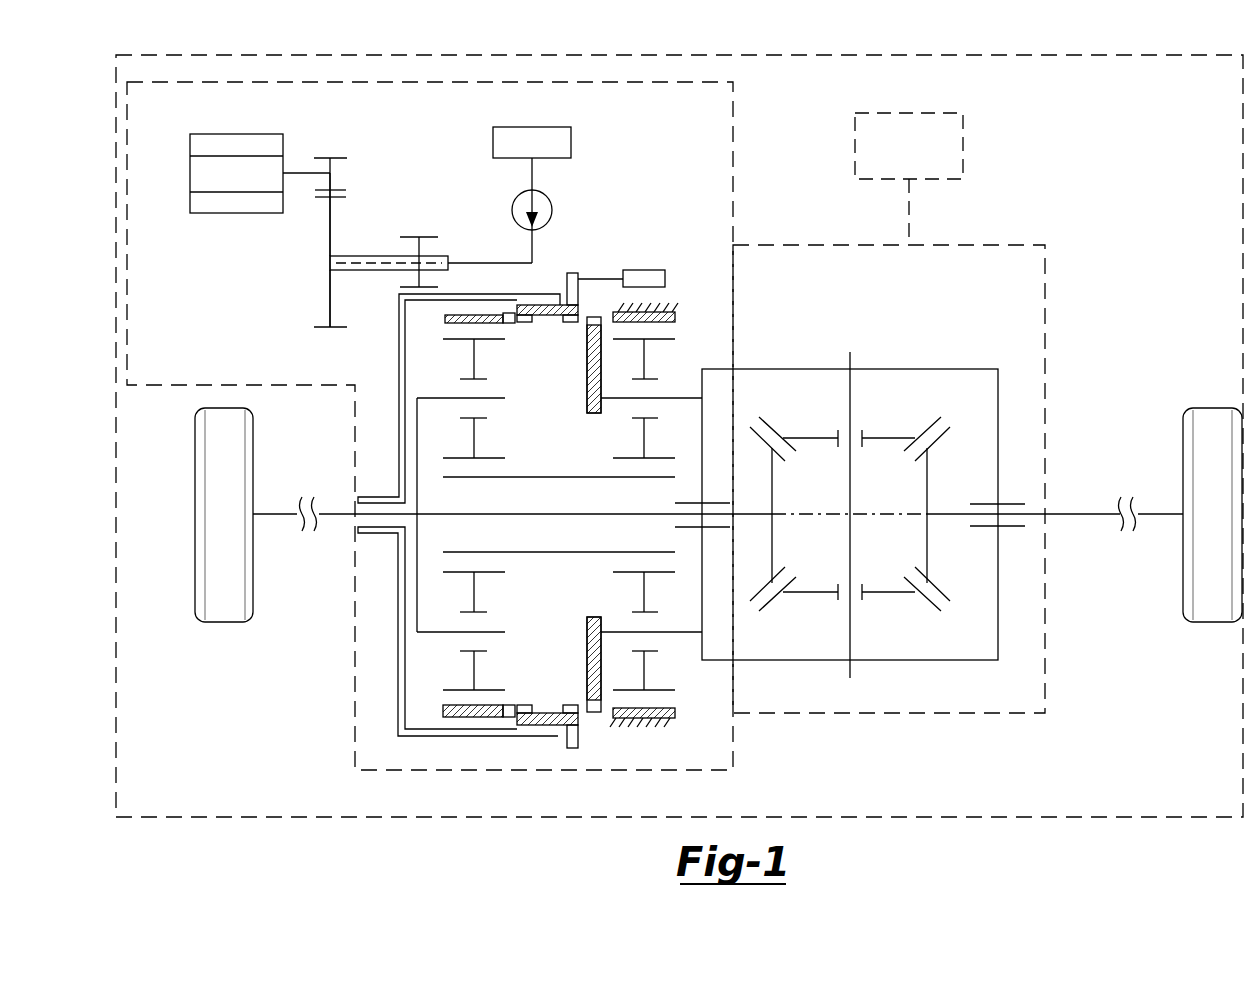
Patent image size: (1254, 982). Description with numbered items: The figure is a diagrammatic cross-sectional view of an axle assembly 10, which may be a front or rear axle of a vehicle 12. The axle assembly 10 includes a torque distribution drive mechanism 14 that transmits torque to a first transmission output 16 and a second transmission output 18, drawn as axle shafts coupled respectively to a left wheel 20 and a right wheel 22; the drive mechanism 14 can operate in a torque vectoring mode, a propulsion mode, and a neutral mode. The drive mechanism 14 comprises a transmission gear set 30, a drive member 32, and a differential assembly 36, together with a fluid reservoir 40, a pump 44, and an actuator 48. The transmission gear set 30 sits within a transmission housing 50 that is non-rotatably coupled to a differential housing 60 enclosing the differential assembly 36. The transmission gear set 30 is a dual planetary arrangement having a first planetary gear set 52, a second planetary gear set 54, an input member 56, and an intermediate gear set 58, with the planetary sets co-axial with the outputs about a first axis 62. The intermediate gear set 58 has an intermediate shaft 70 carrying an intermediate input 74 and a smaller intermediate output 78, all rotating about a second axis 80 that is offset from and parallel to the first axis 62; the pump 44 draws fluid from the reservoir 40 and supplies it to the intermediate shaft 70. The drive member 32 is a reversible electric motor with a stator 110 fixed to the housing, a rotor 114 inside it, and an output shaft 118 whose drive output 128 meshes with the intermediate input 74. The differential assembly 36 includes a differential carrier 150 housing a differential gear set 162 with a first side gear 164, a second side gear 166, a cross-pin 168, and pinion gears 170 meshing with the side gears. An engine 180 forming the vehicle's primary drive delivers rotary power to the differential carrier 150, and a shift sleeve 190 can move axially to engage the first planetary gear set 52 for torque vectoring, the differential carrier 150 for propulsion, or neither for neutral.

The axle assembly 10 is at (1145, 409).
The vehicle 12 is at (1152, 817).
The torque distribution drive mechanism 14 is at (350, 691).
The first transmission output 16 is at (272, 515).
The second transmission output 18 is at (1085, 516).
The left wheel 20 is at (225, 622).
The right wheel 22 is at (1213, 622).
The transmission gear set 30 is at (384, 753).
The drive member 32 is at (210, 206).
The differential assembly 36 is at (1010, 352).
The fluid reservoir 40 is at (571, 133).
The pump 44 is at (547, 198).
The actuator 48 is at (607, 270).
The transmission housing 50 is at (733, 171).
The first planetary gear set 52 is at (470, 668).
The second planetary gear set 54 is at (594, 719).
The input member 56 is at (398, 398).
The intermediate gear set 58 is at (310, 269).
The differential housing 60 is at (1018, 245).
The first axis 62 is at (885, 514).
The intermediate shaft 70 is at (357, 270).
The intermediate input 74 is at (330, 232).
The intermediate output 78 is at (412, 233).
The second axis 80 is at (350, 260).
The stator 110 is at (205, 200).
The rotor 114 is at (198, 172).
The output shaft 118 is at (310, 173).
The drive output 128 is at (337, 157).
The differential carrier 150 is at (998, 424).
The differential gear set 162 is at (905, 395).
The first side gear 164 is at (772, 530).
The second side gear 166 is at (927, 532).
The cross-pin 168 is at (850, 360).
The pinion gears 170 is at (885, 438).
The engine 180 is at (963, 128).
The shift sleeve 190 is at (548, 714).